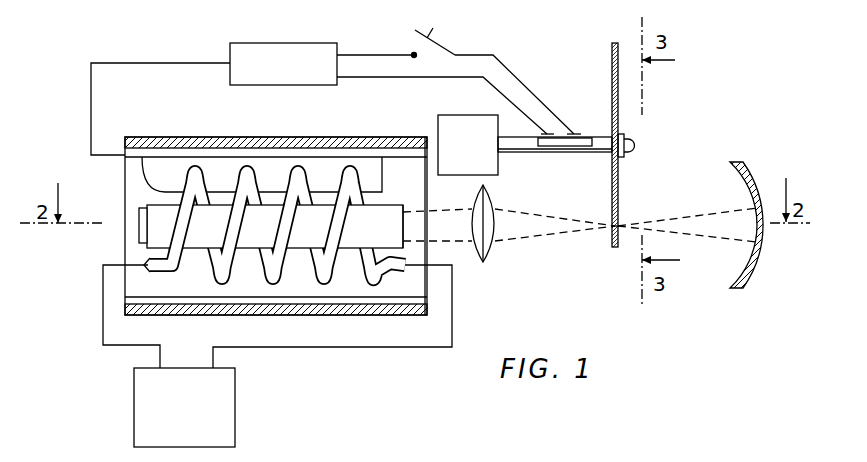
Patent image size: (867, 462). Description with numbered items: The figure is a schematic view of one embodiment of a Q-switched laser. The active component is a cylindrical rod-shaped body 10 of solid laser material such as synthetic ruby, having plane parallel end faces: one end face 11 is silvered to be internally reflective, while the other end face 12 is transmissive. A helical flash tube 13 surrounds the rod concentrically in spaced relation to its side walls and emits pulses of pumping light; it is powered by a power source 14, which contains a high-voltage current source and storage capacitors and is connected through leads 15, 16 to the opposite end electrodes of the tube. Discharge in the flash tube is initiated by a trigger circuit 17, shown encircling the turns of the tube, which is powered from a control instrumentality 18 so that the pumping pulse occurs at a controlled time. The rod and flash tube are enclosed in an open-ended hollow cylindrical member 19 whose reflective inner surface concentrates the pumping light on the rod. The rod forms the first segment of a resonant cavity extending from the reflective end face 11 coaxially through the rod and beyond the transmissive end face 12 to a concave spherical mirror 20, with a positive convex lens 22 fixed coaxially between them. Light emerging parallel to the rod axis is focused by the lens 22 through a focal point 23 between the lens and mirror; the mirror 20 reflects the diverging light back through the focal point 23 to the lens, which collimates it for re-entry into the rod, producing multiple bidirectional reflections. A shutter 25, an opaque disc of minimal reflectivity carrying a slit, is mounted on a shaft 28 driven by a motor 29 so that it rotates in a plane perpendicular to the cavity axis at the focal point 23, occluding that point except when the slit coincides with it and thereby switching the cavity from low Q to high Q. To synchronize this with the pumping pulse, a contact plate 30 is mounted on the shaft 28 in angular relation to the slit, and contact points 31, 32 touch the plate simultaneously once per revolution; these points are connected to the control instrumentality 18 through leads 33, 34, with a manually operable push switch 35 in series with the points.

The rod-shaped body of solid laser material 10 is at (152, 241).
The silvered end face 11 is at (139, 216).
The transmissive end face 12 is at (403, 228).
The helical flash tube 13 is at (245, 256).
The power source 14 is at (236, 408).
The lead 15 is at (337, 348).
The lead 16 is at (103, 311).
The trigger circuit 17 is at (148, 173).
The control instrumentality 18 is at (285, 43).
The hollow cylindrical member 19 is at (186, 137).
The concave spherical mirror 20 is at (760, 268).
The positive convex lens 22 is at (495, 253).
The focal point 23 is at (620, 225).
The shutter 25 is at (619, 186).
The shaft 28 is at (605, 153).
The motor 29 is at (450, 115).
The contact plate 30 is at (558, 148).
The contact point 31 is at (574, 131).
The contact point 32 is at (548, 130).
The lead 33 is at (507, 95).
The lead 34 is at (476, 54).
The push switch 35 is at (445, 45).